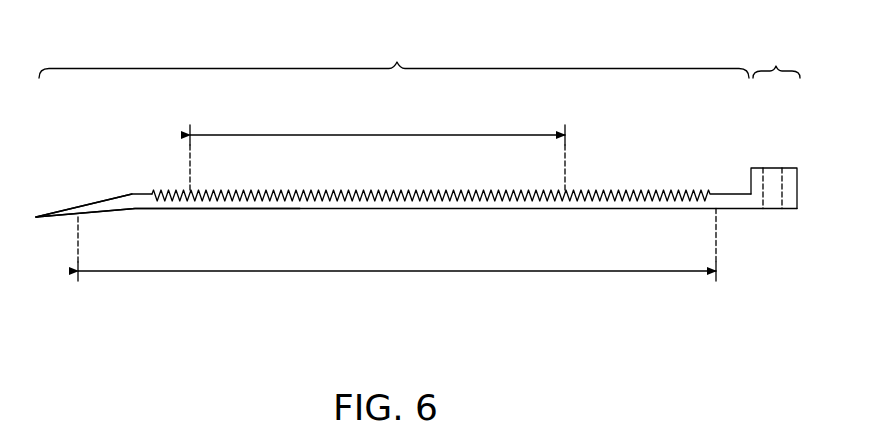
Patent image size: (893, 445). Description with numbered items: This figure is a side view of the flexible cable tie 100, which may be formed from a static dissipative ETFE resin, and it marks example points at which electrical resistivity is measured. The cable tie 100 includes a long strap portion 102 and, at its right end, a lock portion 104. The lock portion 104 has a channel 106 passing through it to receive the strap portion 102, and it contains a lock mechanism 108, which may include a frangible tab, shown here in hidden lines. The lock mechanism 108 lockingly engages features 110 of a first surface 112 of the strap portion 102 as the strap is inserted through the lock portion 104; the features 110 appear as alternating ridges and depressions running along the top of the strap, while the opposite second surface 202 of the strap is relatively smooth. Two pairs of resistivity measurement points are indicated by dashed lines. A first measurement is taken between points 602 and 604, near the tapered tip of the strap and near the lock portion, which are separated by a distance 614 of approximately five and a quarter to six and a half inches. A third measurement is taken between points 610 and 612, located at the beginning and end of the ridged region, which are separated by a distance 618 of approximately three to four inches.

The flexible cable tie 100 is at (196, 42).
The strap portion 102 is at (394, 54).
The lock portion 104 is at (776, 58).
The channel 106 is at (773, 206).
The lock mechanism 108 is at (781, 186).
The features 110 is at (673, 190).
The first surface 112 is at (140, 192).
The second surface 202 is at (140, 209).
The resistivity measurement point 602 is at (78, 219).
The resistivity measurement point 604 is at (717, 211).
The resistivity measurement point 610 is at (190, 191).
The resistivity measurement point 612 is at (565, 191).
The distance 614 is at (458, 272).
The distance 618 is at (433, 131).